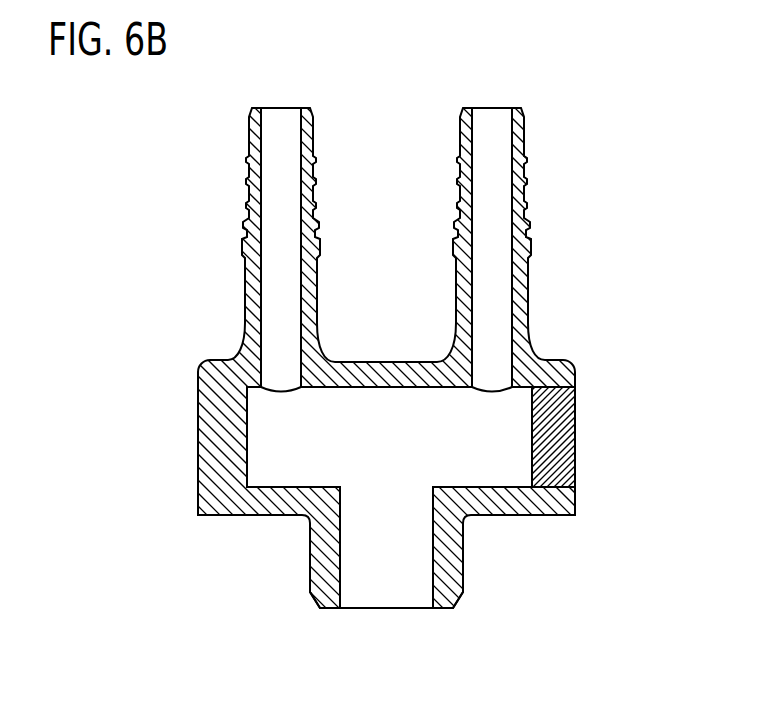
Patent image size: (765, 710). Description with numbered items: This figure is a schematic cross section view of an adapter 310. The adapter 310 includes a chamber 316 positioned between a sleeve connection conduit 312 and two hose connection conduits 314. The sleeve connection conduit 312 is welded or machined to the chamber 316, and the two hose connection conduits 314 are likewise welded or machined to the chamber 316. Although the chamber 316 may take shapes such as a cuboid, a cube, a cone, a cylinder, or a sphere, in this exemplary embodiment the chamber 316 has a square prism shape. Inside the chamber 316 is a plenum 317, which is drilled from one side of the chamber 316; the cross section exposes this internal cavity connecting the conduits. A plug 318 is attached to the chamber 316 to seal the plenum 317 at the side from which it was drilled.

The adapter 310 is at (405, 78).
The sleeve connection conduit 312 is at (310, 560).
The hose connection conduits 314 is at (249, 172).
The chamber 316 is at (198, 432).
The plenum 317 is at (487, 443).
The plug 318 is at (557, 436).